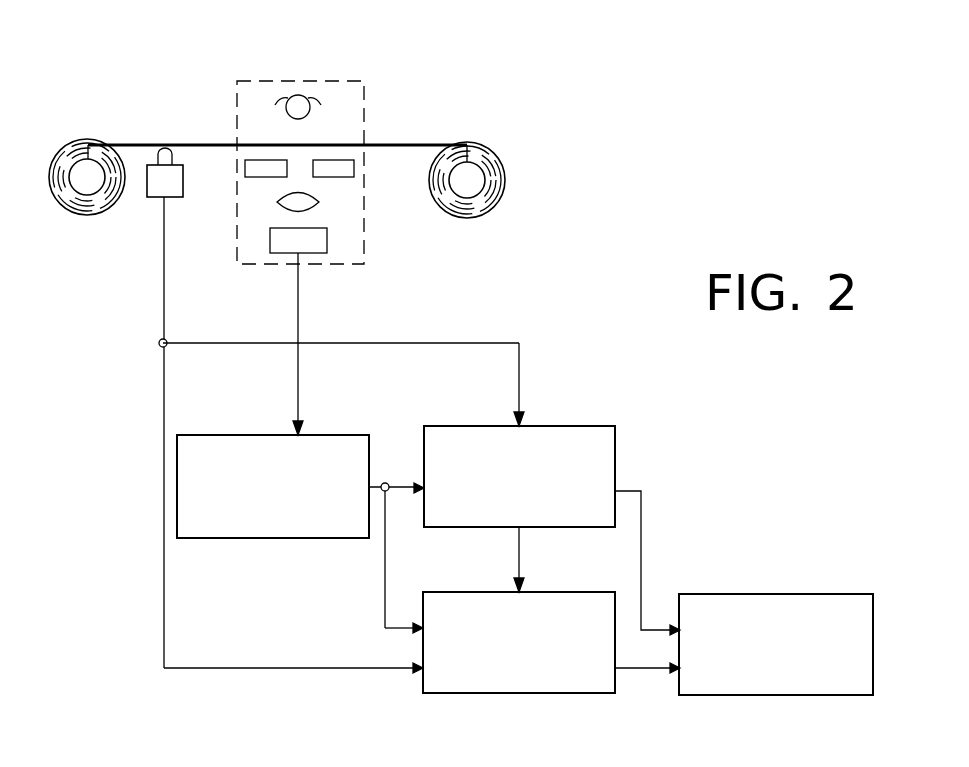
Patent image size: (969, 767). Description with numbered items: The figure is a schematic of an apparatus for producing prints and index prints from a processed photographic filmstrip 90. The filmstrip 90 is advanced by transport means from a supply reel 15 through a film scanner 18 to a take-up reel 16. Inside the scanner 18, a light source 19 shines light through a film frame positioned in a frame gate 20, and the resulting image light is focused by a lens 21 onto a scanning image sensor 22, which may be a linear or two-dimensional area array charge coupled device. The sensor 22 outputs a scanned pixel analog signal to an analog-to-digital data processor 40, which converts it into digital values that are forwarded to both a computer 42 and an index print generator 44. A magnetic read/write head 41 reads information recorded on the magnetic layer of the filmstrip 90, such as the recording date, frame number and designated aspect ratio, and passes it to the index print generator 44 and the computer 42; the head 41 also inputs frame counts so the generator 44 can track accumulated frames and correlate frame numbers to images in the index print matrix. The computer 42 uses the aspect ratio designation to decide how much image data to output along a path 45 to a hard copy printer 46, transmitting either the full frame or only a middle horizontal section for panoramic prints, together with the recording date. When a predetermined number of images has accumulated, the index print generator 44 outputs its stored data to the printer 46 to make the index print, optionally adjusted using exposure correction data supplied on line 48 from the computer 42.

The supply reel 15 is at (88, 145).
The take-up reel 16 is at (467, 160).
The film scanner 18 is at (365, 107).
The light source 19 is at (298, 97).
The frame gate 20 is at (354, 173).
The lens 21 is at (320, 202).
The scanning image sensor 22 is at (270, 243).
The analog-to-digital data processor 40 is at (268, 538).
The magnetic read/write head 41 is at (155, 198).
The computer 42 is at (563, 426).
The index print generator 44 is at (518, 693).
The path 45 is at (642, 520).
The hard copy printer 46 is at (772, 695).
The line 48 is at (520, 538).
The filmstrip 90 is at (150, 143).